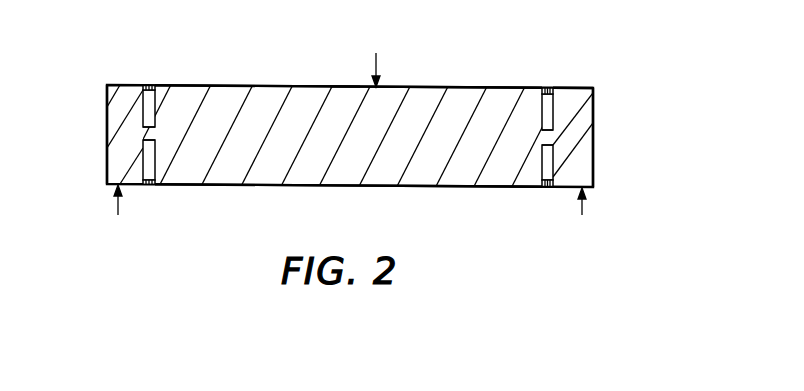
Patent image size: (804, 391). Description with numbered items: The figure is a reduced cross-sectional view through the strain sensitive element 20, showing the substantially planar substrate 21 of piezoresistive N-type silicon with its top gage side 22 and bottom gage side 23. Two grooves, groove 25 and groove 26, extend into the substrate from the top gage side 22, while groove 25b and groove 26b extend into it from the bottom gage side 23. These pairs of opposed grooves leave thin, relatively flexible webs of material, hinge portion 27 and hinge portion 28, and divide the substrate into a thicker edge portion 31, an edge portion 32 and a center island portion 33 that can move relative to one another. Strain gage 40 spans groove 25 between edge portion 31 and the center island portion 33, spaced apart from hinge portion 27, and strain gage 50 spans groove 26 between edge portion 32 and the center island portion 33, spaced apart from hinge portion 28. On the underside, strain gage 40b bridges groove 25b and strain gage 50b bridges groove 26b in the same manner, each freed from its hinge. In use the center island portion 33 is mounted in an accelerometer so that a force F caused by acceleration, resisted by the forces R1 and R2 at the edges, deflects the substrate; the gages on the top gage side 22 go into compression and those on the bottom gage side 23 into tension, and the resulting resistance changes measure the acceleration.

The strain sensitive element 20 is at (560, 41).
The substrate 21 is at (594, 100).
The top gage side 22 is at (270, 85).
The bottom gage side 23 is at (277, 186).
The groove 25 is at (547, 121).
The groove 25b is at (547, 168).
The groove 26 is at (142, 107).
The groove 26b is at (142, 158).
The hinge portion 27 is at (546, 143).
The hinge portion 28 is at (147, 133).
The edge portion 31 is at (576, 88).
The edge portion 32 is at (126, 83).
The center island portion 33 is at (344, 86).
The strain gage 40 is at (545, 87).
The strain gage 40b is at (550, 188).
The strain gage 50 is at (152, 85).
The strain gage 50b is at (148, 185).
The force F is at (381, 57).
The resisting force R1 is at (116, 216).
The resisting force R2 is at (573, 218).